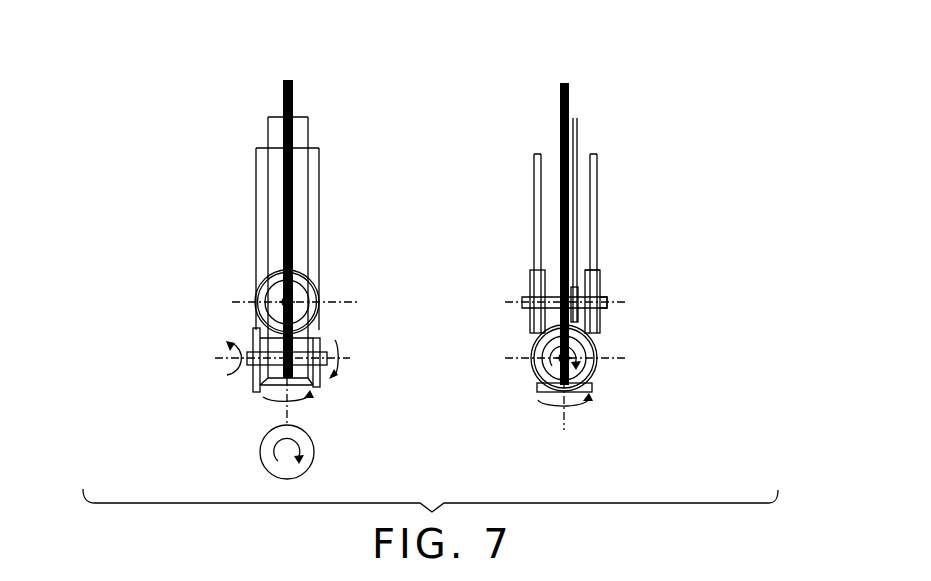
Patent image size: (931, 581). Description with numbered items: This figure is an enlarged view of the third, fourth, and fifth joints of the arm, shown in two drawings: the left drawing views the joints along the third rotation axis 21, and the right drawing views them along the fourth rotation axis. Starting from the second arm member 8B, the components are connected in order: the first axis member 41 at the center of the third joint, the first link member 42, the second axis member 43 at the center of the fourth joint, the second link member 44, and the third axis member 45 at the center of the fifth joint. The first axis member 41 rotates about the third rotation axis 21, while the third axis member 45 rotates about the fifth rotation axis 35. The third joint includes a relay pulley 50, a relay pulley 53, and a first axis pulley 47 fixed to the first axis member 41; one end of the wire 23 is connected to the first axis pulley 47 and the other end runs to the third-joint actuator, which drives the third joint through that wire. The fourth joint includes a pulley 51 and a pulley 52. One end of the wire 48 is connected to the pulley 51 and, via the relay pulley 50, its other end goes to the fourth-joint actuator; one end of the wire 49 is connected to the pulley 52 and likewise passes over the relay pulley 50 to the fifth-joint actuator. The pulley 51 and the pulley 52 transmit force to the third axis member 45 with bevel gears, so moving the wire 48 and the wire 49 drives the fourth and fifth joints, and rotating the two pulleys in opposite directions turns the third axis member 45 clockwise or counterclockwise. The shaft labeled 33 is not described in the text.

The second arm member 8B is at (283, 90).
The wire 23 is at (283, 114).
The wire 48 is at (309, 159).
The wire 49 is at (592, 176).
The relay pulley 50 is at (327, 288).
The first axis member 41 is at (257, 300).
The pulley 51 is at (255, 336).
The first link member 42 is at (316, 338).
The shaft 33 is at (247, 357).
The second axis member 43 is at (228, 344).
The pulley 52 is at (320, 390).
The second link member 44 is at (253, 383).
The third axis member 45 is at (253, 388).
The fifth rotation axis 35 is at (272, 412).
The first axis pulley 47 is at (577, 287).
The relay pulley 53 is at (600, 283).
The third rotation axis 21 is at (608, 304).